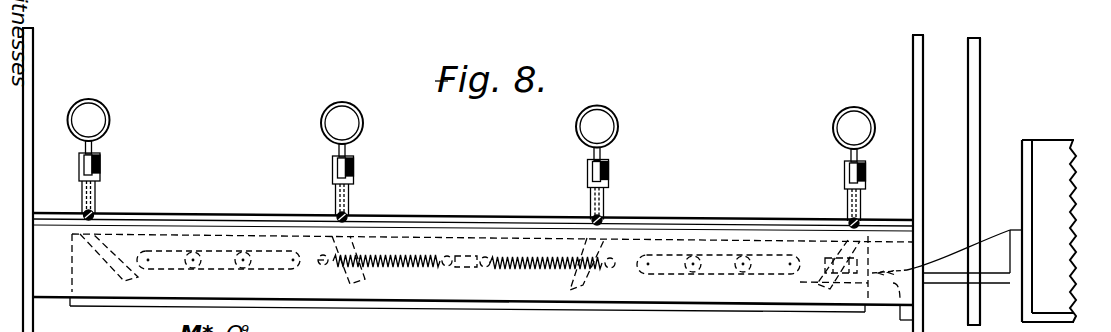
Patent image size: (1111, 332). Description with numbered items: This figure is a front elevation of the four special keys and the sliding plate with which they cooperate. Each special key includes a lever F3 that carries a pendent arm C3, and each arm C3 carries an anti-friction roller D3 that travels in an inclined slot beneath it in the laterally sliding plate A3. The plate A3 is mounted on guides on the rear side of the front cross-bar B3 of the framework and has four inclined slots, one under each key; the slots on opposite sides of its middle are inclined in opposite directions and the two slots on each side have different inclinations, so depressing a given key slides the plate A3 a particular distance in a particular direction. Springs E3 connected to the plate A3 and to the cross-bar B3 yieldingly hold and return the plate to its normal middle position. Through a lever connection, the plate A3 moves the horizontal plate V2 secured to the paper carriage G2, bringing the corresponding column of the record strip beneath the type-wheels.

The special key lever F3 is at (92, 144).
The pendent arm C3 is at (98, 183).
The anti-friction roller D3 is at (95, 211).
The springs E3 is at (408, 293).
The front cross-bar B3 is at (468, 276).
The laterally sliding plate A3 is at (468, 304).
The horizontal plate V2 is at (952, 284).
The paper carriage G2 is at (1022, 307).